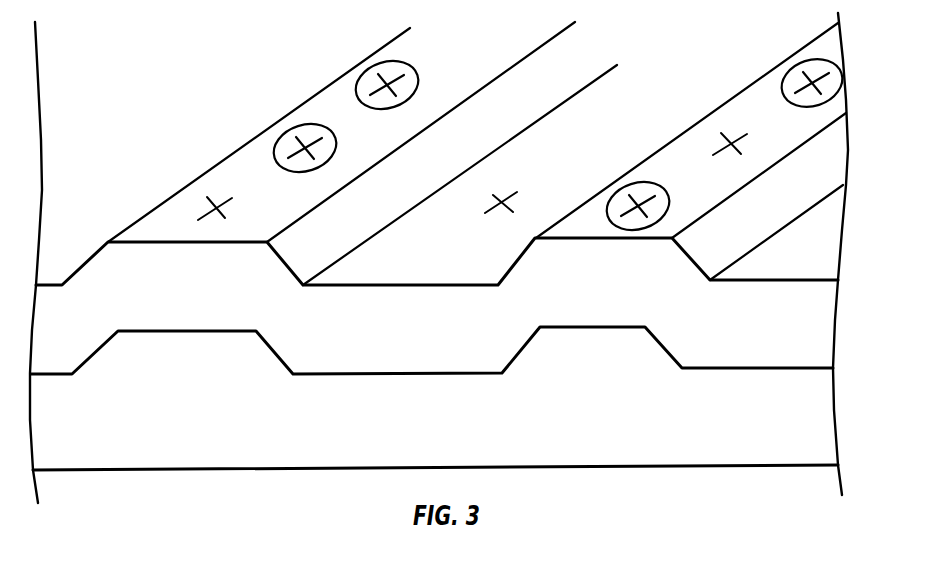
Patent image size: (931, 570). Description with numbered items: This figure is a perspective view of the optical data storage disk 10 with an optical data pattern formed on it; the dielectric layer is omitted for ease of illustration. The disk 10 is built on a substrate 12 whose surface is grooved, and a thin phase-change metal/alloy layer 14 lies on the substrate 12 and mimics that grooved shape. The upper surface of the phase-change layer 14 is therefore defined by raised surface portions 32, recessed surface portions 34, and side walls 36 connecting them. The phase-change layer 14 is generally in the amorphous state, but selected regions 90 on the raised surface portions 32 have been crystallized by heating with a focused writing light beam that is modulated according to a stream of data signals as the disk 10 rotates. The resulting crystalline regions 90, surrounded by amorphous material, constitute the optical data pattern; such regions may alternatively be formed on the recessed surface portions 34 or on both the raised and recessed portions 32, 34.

The optical data storage disk 10 is at (118, 132).
The substrate 12 is at (411, 418).
The phase-change metal/alloy layer 14 is at (411, 345).
The raised surface portions 32 is at (294, 206).
The recessed surface portions 34 is at (442, 263).
The side walls 36 is at (408, 192).
The crystalline regions 90 is at (538, 134).